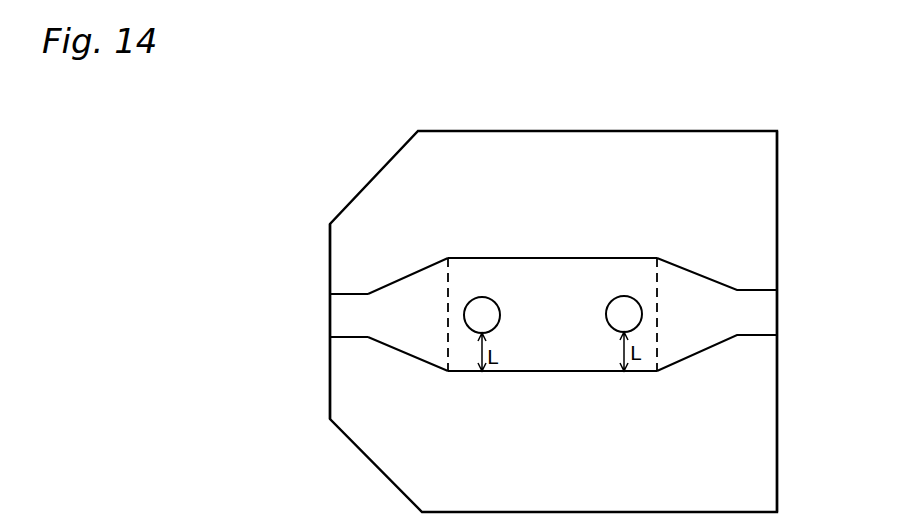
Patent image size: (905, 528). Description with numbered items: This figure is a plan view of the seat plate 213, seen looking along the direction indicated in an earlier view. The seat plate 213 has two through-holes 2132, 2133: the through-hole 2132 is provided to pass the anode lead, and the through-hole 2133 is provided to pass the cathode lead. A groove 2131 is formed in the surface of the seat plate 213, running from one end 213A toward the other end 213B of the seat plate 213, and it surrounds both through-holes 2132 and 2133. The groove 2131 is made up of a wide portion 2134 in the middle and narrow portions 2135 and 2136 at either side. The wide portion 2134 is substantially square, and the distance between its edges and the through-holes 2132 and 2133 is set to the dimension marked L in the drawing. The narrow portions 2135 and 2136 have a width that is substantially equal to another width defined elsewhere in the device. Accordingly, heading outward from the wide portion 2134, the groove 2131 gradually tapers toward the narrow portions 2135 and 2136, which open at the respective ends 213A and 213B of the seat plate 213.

The seat plate 213 is at (567, 143).
The groove 2131 is at (398, 292).
The through-hole 2132 is at (480, 300).
The through-hole 2133 is at (623, 300).
The wide portion 2134 is at (554, 258).
The narrow portion 2135 is at (340, 316).
The narrow portion 2136 is at (772, 309).
The one end 213A is at (330, 375).
The other end 213B is at (777, 360).